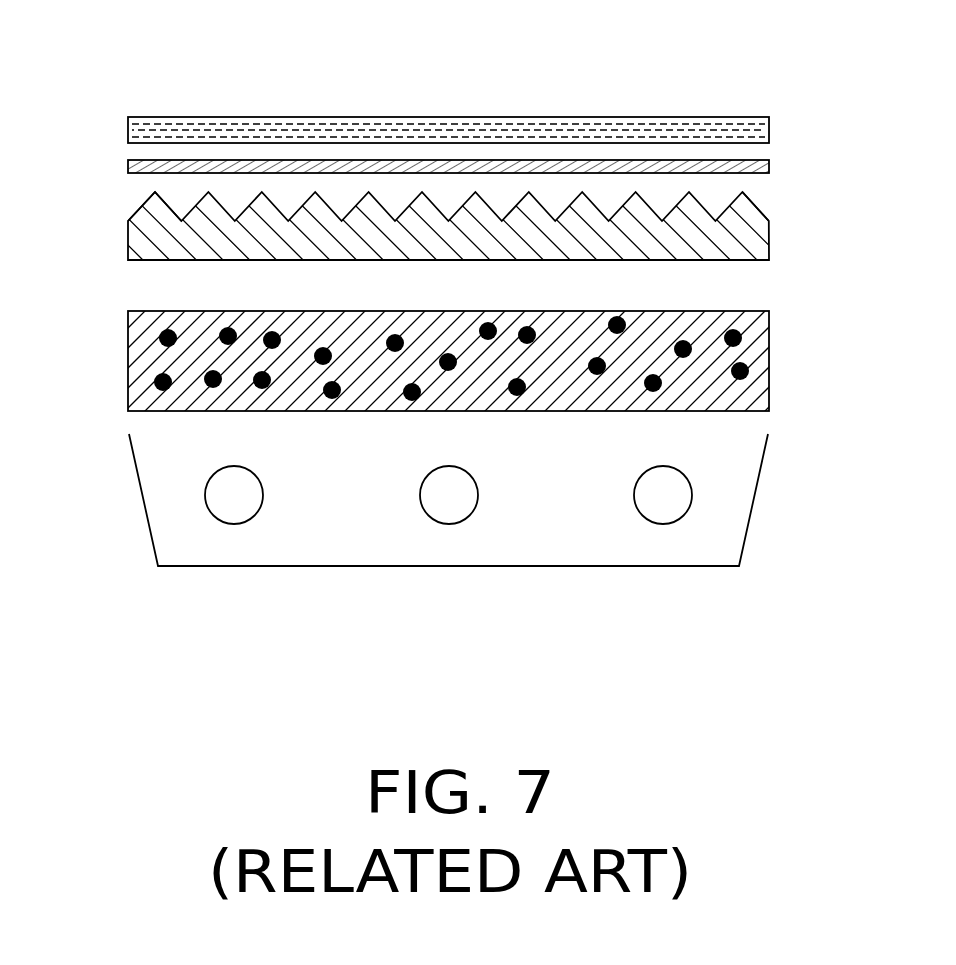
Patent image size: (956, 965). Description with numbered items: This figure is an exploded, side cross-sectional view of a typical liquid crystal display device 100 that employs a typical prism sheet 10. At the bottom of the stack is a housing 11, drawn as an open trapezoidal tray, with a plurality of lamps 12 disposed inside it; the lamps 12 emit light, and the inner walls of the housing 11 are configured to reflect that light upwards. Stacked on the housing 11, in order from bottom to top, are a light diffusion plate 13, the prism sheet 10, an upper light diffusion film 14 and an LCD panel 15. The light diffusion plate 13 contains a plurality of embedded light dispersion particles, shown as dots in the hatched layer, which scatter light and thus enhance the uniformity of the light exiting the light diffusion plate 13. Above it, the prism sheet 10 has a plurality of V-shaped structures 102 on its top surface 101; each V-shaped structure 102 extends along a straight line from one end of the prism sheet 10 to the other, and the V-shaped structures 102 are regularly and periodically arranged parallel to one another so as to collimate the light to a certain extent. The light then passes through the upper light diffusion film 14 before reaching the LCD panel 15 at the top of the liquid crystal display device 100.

The liquid crystal display device 100 is at (506, 66).
The LCD panel 15 is at (769, 123).
The upper light diffusion film 14 is at (769, 163).
The prism sheet 10 is at (769, 246).
The top surface 101 is at (778, 210).
The V-shaped structure 102 is at (153, 203).
The light diffusion plate 13 is at (769, 359).
The housing 11 is at (760, 480).
The lamp 12 is at (669, 512).